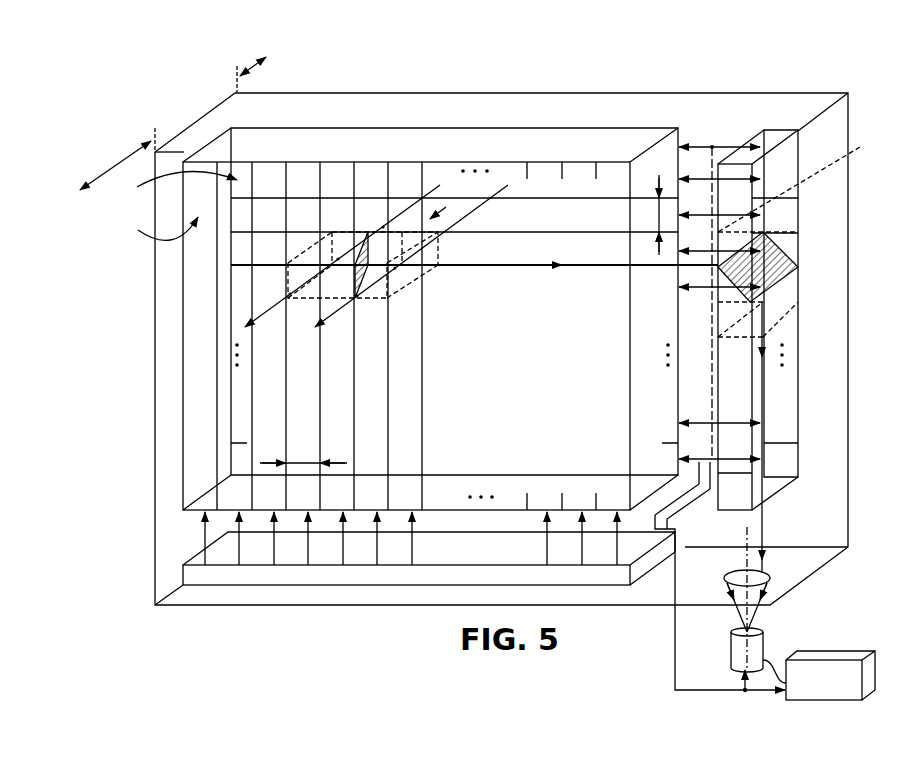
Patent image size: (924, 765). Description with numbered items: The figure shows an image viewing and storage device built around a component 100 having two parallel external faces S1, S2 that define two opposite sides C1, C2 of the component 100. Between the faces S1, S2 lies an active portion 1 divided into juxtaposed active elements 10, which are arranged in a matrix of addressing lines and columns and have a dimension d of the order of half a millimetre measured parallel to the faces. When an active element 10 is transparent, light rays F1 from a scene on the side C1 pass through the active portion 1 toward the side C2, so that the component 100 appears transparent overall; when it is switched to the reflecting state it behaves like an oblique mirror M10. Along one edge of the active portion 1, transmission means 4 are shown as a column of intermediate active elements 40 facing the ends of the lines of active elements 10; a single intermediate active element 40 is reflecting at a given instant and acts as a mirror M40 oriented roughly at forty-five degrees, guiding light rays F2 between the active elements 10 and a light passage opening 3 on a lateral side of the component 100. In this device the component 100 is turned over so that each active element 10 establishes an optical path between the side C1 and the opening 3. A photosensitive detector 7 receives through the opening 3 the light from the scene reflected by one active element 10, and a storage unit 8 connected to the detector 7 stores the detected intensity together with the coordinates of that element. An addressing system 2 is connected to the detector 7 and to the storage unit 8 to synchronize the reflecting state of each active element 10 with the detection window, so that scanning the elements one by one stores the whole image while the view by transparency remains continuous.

The component 100 is at (811, 93).
The active portion 1 is at (656, 126).
The addressing system 2 is at (182, 572).
The light passage opening 3 is at (733, 568).
The transmission means 4 is at (800, 346).
The photosensitive detector 7 is at (730, 648).
The storage unit 8 is at (850, 659).
The active element 10 is at (426, 277).
The intermediate active element 40 is at (803, 234).
The mirror M10 is at (368, 281).
The mirror M40 is at (790, 257).
The first side C1 is at (247, 69).
The second side C2 is at (117, 159).
The first external face S1 is at (176, 186).
The second external face S2 is at (157, 228).
The light rays F1 is at (376, 266).
The light rays F2 is at (446, 212).
The dimension d is at (459, 319).